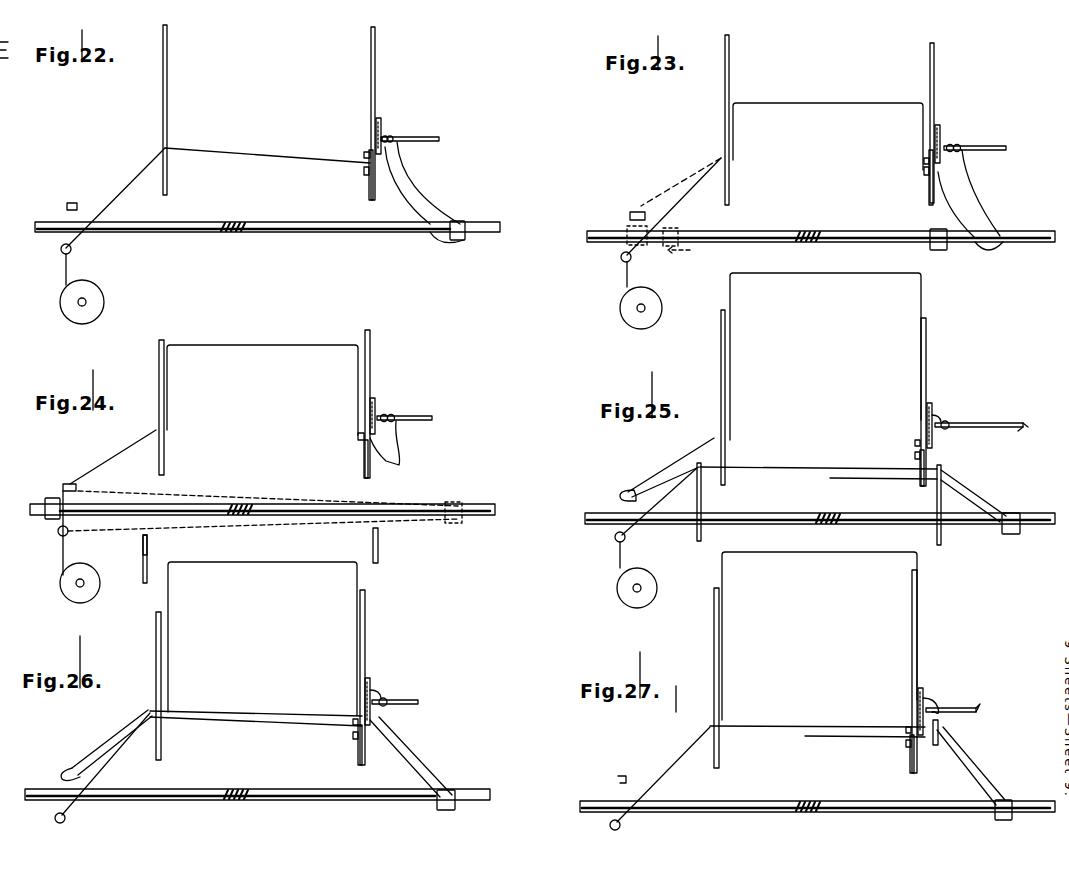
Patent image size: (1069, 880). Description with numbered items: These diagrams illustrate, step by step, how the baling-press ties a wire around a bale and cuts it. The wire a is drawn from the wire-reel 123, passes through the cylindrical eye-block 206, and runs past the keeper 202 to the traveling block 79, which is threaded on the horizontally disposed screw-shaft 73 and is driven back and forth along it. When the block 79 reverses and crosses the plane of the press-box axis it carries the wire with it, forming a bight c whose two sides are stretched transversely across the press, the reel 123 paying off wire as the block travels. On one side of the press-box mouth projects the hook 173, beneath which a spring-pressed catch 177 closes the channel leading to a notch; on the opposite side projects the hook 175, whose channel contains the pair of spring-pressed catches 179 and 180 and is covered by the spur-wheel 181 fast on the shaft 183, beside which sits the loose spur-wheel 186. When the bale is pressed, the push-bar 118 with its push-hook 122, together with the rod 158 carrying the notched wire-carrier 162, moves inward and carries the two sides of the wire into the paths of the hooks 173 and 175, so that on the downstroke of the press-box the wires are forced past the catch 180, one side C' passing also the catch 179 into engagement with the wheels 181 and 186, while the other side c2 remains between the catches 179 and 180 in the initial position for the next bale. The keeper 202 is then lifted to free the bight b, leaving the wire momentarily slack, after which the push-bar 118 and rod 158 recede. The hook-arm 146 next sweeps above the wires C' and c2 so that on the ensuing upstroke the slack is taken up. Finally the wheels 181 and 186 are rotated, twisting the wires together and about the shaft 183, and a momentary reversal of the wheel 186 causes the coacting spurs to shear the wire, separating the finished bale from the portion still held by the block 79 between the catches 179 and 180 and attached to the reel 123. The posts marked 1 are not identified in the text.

In FIG. 22, the frame / standard 1 is at (376, 70).
In FIG. 23, the frame / standard 1 is at (935, 78).
In FIG. 24, the frame / standard 1 is at (371, 370).
In FIG. 25, the frame / standard 1 is at (927, 358).
In FIG. 26, the frame / standard 1 is at (366, 635).
In FIG. 27, the frame / standard 1 is at (713, 660).
In FIG. 22, the screw-shaft 73 is at (286, 232).
In FIG. 23, the screw-shaft 73 is at (787, 231).
In FIG. 24, the screw-shaft 73 is at (281, 516).
In FIG. 25, the screw-shaft 73 is at (797, 525).
In FIG. 26, the screw-shaft 73 is at (260, 789).
In FIG. 27, the screw-shaft 73 is at (805, 801).
In FIG. 22, the traveling block 79 is at (461, 224).
In FIG. 23, the traveling block 79 is at (936, 229).
In FIG. 24, the traveling block 79 is at (50, 498).
In FIG. 25, the traveling block 79 is at (1010, 534).
In FIG. 26, the traveling block 79 is at (450, 794).
In FIG. 27, the traveling block 79 is at (1008, 802).
In FIG. 24, the push-bar 118 is at (143, 562).
In FIG. 25, the push-bar 118 is at (697, 538).
In FIG. 24, the push-hook 122 is at (148, 548).
In FIG. 25, the push-hook 122 is at (702, 482).
In FIG. 22, the wire-reel 123 is at (98, 310).
In FIG. 23, the wire-reel 123 is at (650, 322).
In FIG. 24, the wire-reel 123 is at (90, 597).
In FIG. 27, the hook-arm 146 is at (935, 746).
In FIG. 24, the rod 158 is at (378, 560).
In FIG. 25, the rod 158 is at (942, 538).
In FIG. 25, the wire-carrier 162 is at (943, 467).
In FIG. 22, the hook 173 is at (168, 180).
In FIG. 23, the hook 173 is at (730, 185).
In FIG. 24, the hook 173 is at (166, 465).
In FIG. 25, the hook 173 is at (726, 480).
In FIG. 26, the hook 173 is at (162, 750).
In FIG. 27, the hook 173 is at (720, 760).
In FIG. 22, the hook 175 is at (369, 196).
In FIG. 23, the hook 175 is at (930, 190).
In FIG. 24, the hook 175 is at (364, 468).
In FIG. 25, the hook 175 is at (922, 490).
In FIG. 26, the hook 175 is at (360, 762).
In FIG. 27, the hook 175 is at (910, 766).
In FIG. 22, the spring-pressed catch 177 is at (157, 155).
In FIG. 23, the spring-pressed catch 177 is at (720, 165).
In FIG. 24, the spring-pressed catch 177 is at (150, 440).
In FIG. 25, the spring-pressed catch 177 is at (715, 440).
In FIG. 26, the spring-pressed catch 177 is at (152, 720).
In FIG. 27, the spring-pressed catch 177 is at (713, 732).
In FIG. 22, the spring-pressed catch 179 is at (364, 155).
In FIG. 23, the spring-pressed catch 179 is at (926, 161).
In FIG. 25, the spring-pressed catch 179 is at (915, 443).
In FIG. 26, the spring-pressed catch 179 is at (353, 722).
In FIG. 27, the spring-pressed catch 179 is at (906, 729).
In FIG. 22, the spring-pressed catch 180 is at (365, 175).
In FIG. 23, the spring-pressed catch 180 is at (922, 176).
In FIG. 24, the spring-pressed catch 180 is at (357, 445).
In FIG. 25, the spring-pressed catch 180 is at (915, 455).
In FIG. 26, the spring-pressed catch 180 is at (354, 738).
In FIG. 27, the spring-pressed catch 180 is at (906, 744).
In FIG. 22, the spur-wheel 181 is at (376, 129).
In FIG. 23, the spur-wheel 181 is at (937, 144).
In FIG. 24, the spur-wheel 181 is at (372, 416).
In FIG. 25, the spur-wheel 181 is at (927, 417).
In FIG. 26, the spur-wheel 181 is at (365, 690).
In FIG. 27, the spur-wheel 181 is at (920, 711).
In FIG. 22, the shaft 183 is at (424, 137).
In FIG. 23, the shaft 183 is at (989, 146).
In FIG. 24, the shaft 183 is at (424, 416).
In FIG. 25, the shaft 183 is at (998, 426).
In FIG. 26, the shaft 183 is at (412, 700).
In FIG. 27, the shaft 183 is at (976, 708).
In FIG. 22, the loose spur-wheel 186 is at (388, 143).
In FIG. 23, the loose spur-wheel 186 is at (946, 144).
In FIG. 24, the loose spur-wheel 186 is at (388, 418).
In FIG. 25, the loose spur-wheel 186 is at (933, 432).
In FIG. 26, the loose spur-wheel 186 is at (386, 711).
In FIG. 27, the loose spur-wheel 186 is at (931, 705).
In FIG. 22, the keeper 202 is at (70, 203).
In FIG. 23, the keeper 202 is at (637, 212).
In FIG. 24, the keeper 202 is at (70, 484).
In FIG. 25, the keeper 202 is at (625, 492).
In FIG. 27, the keeper 202 is at (626, 776).
In FIG. 22, the eye-block 206 is at (60, 249).
In FIG. 23, the eye-block 206 is at (620, 256).
In FIG. 24, the eye-block 206 is at (58, 531).
In FIG. 25, the eye-block 206 is at (615, 540).
In FIG. 26, the eye-block 206 is at (66, 818).
In FIG. 27, the eye-block 206 is at (610, 825).
In FIG. 22, the wire a is at (65, 276).
In FIG. 23, the wire a is at (627, 280).
In FIG. 24, the wire a is at (63, 558).
In FIG. 26, the wire a is at (60, 826).
In FIG. 27, the wire a is at (655, 782).
In FIG. 25, the bight b is at (652, 484).
In FIG. 26, the bight b is at (106, 745).
In FIG. 22, the bight c is at (424, 192).
In FIG. 23, the bight c is at (970, 200).
In FIG. 24, the bight c is at (385, 443).
In FIG. 25, the bight c is at (973, 496).
In FIG. 26, the bight c is at (411, 757).
In FIG. 27, the bight c is at (971, 766).
In FIG. 24, the wire side C' is at (268, 492).
In FIG. 25, the wire side C' is at (818, 459).
In FIG. 27, the wire side C' is at (817, 715).
In FIG. 24, the wire side c2 is at (318, 526).
In FIG. 25, the wire side c2 is at (859, 481).
In FIG. 27, the wire side c2 is at (826, 738).